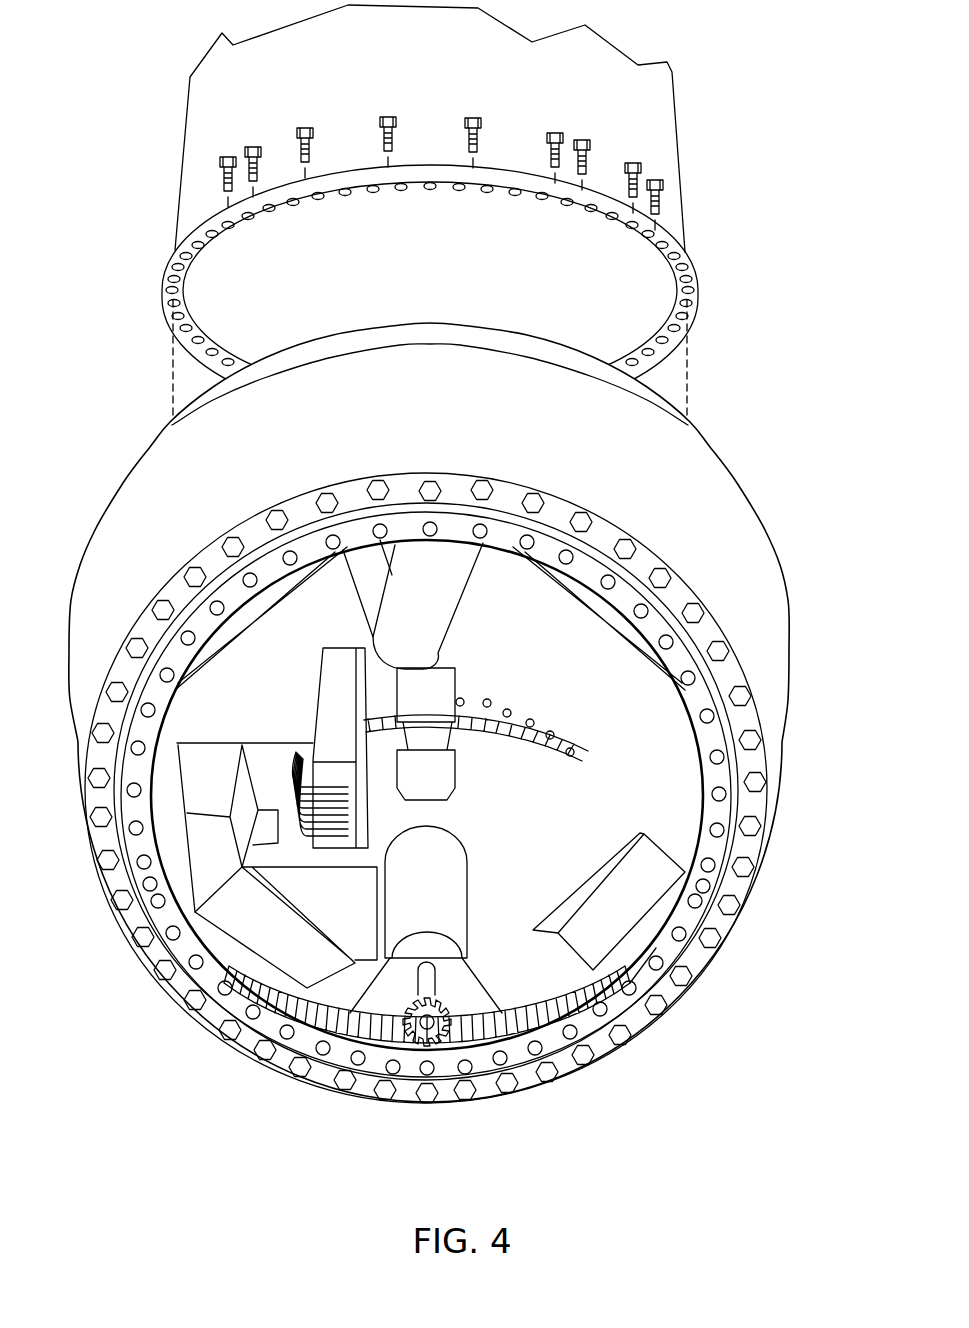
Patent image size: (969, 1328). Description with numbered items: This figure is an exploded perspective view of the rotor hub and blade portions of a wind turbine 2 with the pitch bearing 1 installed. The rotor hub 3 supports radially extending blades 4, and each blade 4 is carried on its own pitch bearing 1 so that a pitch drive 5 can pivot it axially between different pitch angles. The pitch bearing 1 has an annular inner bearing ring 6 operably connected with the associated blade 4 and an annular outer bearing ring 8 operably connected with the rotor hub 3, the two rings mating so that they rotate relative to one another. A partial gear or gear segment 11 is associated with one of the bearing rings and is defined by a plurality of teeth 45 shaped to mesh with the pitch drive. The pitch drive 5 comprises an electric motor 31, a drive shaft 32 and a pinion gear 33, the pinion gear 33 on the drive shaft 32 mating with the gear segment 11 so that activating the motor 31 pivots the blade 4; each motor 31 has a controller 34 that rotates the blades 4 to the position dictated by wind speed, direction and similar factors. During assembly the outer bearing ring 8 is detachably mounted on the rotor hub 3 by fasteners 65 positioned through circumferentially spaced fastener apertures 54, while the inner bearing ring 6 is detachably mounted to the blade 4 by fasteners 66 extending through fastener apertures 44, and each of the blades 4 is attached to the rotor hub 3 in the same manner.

The pitch bearing 1 is at (560, 772).
The wind turbine 2 is at (150, 80).
The rotor hub 3 is at (765, 568).
The blade 4 is at (650, 103).
The pitch drive 5 is at (372, 633).
The inner bearing ring 6 is at (712, 816).
The outer bearing ring 8 is at (748, 722).
The gear segment 11 is at (482, 730).
The electric motor 31 is at (455, 585).
The drive shaft 32 is at (440, 957).
The pinion gear 33 is at (433, 1047).
The controller 34 is at (283, 896).
The fastener apertures 44 is at (176, 690).
The teeth 45 is at (656, 948).
The fastener apertures 54 is at (745, 662).
The fasteners 65 is at (233, 547).
The fasteners 66 is at (657, 182).